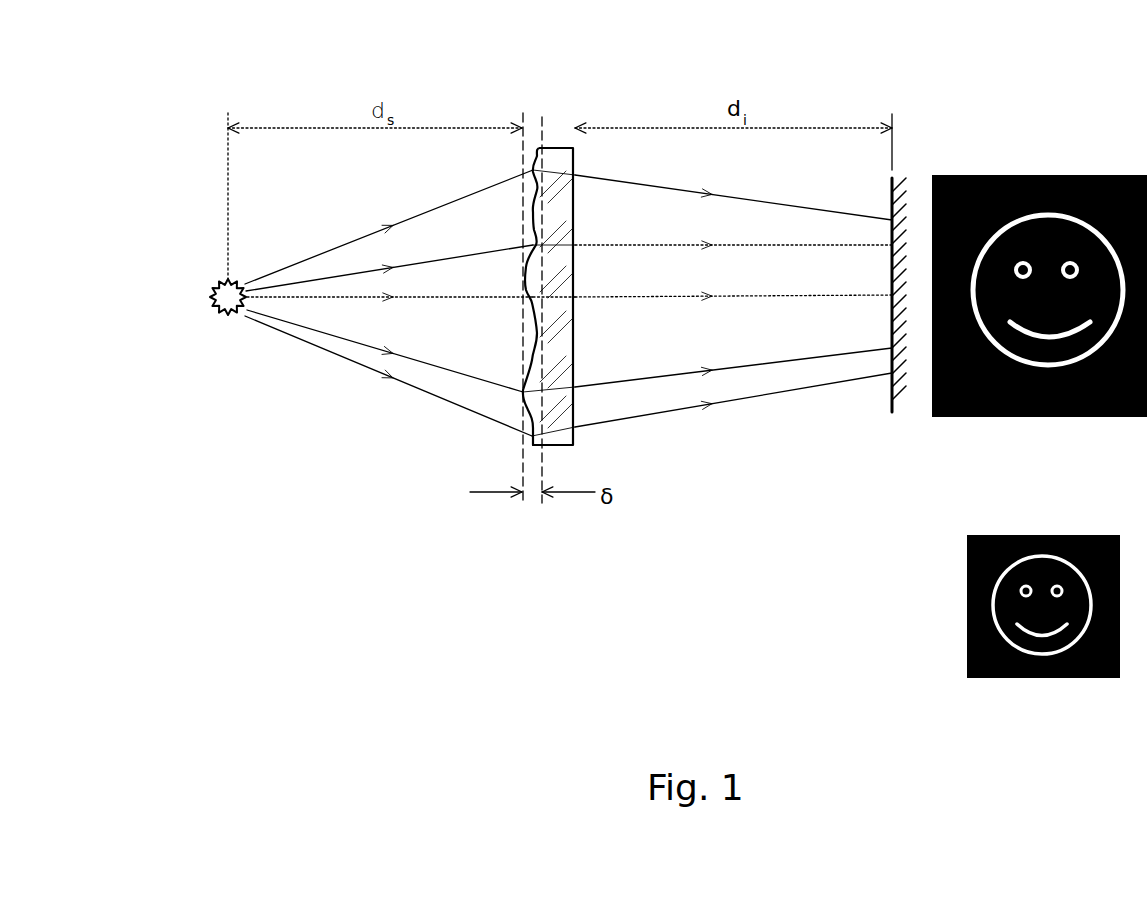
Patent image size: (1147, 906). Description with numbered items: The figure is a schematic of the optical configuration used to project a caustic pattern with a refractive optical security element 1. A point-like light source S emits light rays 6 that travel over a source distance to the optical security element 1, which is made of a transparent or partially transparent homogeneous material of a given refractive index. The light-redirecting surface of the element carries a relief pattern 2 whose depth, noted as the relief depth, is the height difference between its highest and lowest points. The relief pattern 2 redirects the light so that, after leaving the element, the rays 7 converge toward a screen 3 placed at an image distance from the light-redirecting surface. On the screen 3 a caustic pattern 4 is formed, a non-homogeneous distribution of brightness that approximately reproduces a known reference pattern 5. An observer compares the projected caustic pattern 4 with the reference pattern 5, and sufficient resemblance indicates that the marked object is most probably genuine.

The optical security element 1 is at (552, 155).
The relief pattern 2 is at (520, 415).
The screen 3 is at (888, 393).
The caustic pattern 4 is at (1045, 175).
The reference pattern 5 is at (1040, 533).
The light rays 6 is at (342, 357).
The output light beam 7 is at (658, 415).
The light source S is at (220, 318).